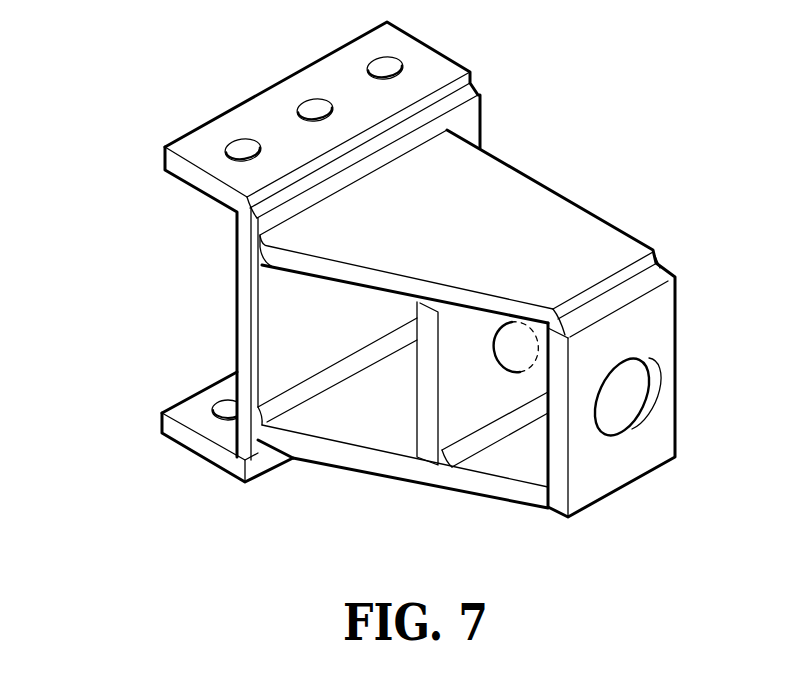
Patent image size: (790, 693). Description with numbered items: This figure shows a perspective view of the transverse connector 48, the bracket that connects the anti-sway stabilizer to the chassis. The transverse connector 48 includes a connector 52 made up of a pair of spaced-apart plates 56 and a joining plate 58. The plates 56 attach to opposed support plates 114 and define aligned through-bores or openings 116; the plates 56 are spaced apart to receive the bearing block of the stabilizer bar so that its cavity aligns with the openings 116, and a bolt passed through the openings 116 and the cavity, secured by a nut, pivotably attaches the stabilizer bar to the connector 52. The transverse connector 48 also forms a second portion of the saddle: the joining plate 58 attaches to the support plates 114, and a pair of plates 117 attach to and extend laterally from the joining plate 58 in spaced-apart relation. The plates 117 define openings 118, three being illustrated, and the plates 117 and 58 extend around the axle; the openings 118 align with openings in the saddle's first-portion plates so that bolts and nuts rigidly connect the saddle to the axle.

The transverse connector 48 is at (226, 54).
The plates 117 is at (194, 136).
The openings 118 is at (320, 107).
The joining plate 58 is at (272, 325).
The support plates 114 is at (490, 190).
The plates 56 is at (460, 423).
The openings 116 is at (540, 330).
The connector 52 is at (551, 527).